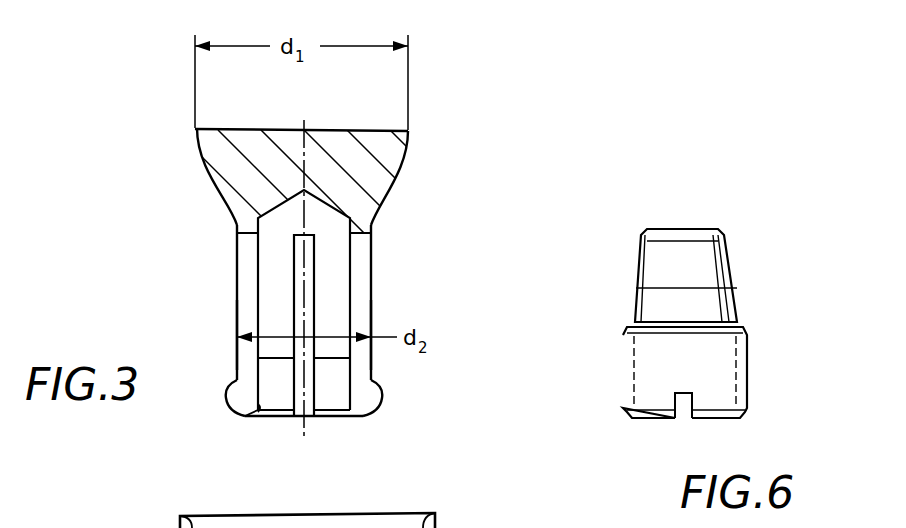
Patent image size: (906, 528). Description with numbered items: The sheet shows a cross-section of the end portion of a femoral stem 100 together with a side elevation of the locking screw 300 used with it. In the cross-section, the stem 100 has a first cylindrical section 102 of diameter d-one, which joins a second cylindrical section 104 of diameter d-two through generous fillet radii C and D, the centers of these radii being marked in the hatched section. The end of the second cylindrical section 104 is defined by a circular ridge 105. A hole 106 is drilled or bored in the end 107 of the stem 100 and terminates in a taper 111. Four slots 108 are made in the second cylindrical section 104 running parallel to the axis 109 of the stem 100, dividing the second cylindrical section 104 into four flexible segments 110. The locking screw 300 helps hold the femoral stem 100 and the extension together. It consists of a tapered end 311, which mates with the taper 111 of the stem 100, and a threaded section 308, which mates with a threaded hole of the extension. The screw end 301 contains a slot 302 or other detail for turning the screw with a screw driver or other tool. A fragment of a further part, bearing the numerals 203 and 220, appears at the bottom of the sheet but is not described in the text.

In FIG. 3, the femoral stem 100 is at (434, 187).
In FIG. 3, the first cylindrical section 102 is at (197, 128).
In FIG. 3, the second cylindrical section 104 is at (371, 262).
In FIG. 3, the circular ridge 105 is at (382, 398).
In FIG. 3, the hole 106 is at (264, 283).
In FIG. 3, the end 107 is at (360, 418).
In FIG. 3, the slots 108 is at (305, 258).
In FIG. 3, the axis 109 is at (304, 129).
In FIG. 3, the flexible segments 110 is at (250, 323).
In FIG. 3, the taper 111 is at (268, 420).
In FIG. 3, the fillet radius C is at (325, 147).
In FIG. 3, the fillet radius D is at (386, 222).
In FIG. 3, the body 203 is at (181, 517).
In FIG. 3, the corner 220 is at (410, 527).
In FIG. 6, the locking screw 300 is at (574, 333).
In FIG. 6, the screw end 301 is at (737, 418).
In FIG. 6, the slot 302 is at (683, 412).
In FIG. 6, the threaded section 308 is at (747, 375).
In FIG. 6, the tapered end 311 is at (637, 258).